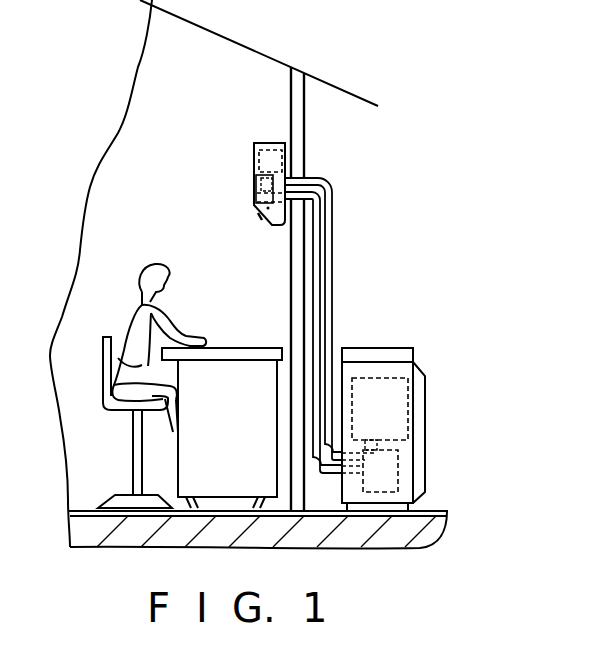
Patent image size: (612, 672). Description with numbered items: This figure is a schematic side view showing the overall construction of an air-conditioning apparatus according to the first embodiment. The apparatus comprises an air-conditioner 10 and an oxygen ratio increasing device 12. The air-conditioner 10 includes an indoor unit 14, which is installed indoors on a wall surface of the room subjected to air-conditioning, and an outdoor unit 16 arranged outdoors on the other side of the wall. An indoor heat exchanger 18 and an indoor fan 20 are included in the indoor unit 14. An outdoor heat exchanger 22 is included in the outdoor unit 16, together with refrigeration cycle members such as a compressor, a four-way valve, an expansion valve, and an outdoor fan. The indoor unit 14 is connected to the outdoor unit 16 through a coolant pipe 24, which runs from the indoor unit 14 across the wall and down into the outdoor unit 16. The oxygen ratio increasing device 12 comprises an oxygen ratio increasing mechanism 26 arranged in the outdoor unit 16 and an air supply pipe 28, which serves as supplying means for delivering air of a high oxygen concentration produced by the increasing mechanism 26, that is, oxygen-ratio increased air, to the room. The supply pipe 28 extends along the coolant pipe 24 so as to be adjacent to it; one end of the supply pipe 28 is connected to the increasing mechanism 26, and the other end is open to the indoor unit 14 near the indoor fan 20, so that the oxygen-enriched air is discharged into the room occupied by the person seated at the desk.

The air-conditioner 10 is at (398, 304).
The oxygen ratio increasing device 12 is at (460, 491).
The indoor unit 14 is at (234, 150).
The outdoor unit 16 is at (414, 420).
The indoor heat exchanger 18 is at (255, 174).
The indoor fan 20 is at (256, 200).
The outdoor heat exchanger 22 is at (402, 393).
The coolant pipe 24 is at (333, 213).
The oxygen ratio increasing mechanism 26 is at (393, 467).
The air supply pipe 28 is at (318, 252).